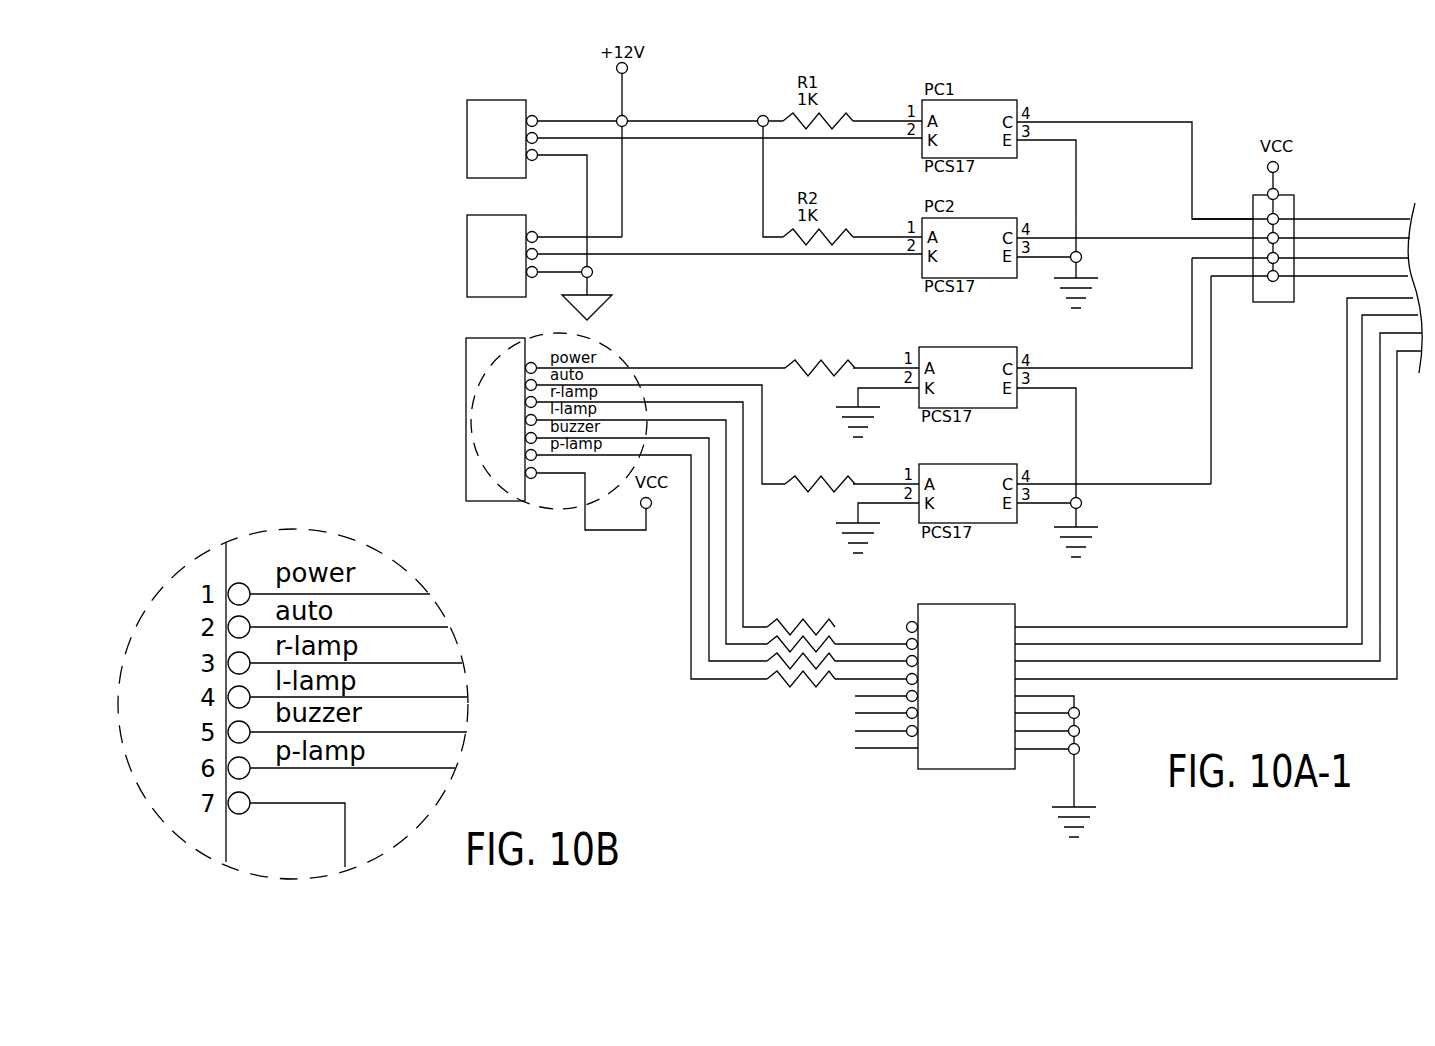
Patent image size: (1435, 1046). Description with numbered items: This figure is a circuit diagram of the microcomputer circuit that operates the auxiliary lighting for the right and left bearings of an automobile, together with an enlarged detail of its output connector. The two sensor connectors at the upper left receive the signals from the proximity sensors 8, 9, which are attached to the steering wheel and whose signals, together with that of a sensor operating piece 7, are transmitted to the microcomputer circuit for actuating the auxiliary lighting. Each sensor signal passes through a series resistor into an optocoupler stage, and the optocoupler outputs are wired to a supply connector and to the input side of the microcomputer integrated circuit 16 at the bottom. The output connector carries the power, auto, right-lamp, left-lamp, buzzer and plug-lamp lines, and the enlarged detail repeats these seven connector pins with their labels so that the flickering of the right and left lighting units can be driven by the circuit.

The proximity sensor 8 is at (467, 112).
The proximity sensor 9 is at (467, 277).
The sensor operating piece 7 is at (501, 408).
The 16-pin integrated circuit 16 is at (907, 627).